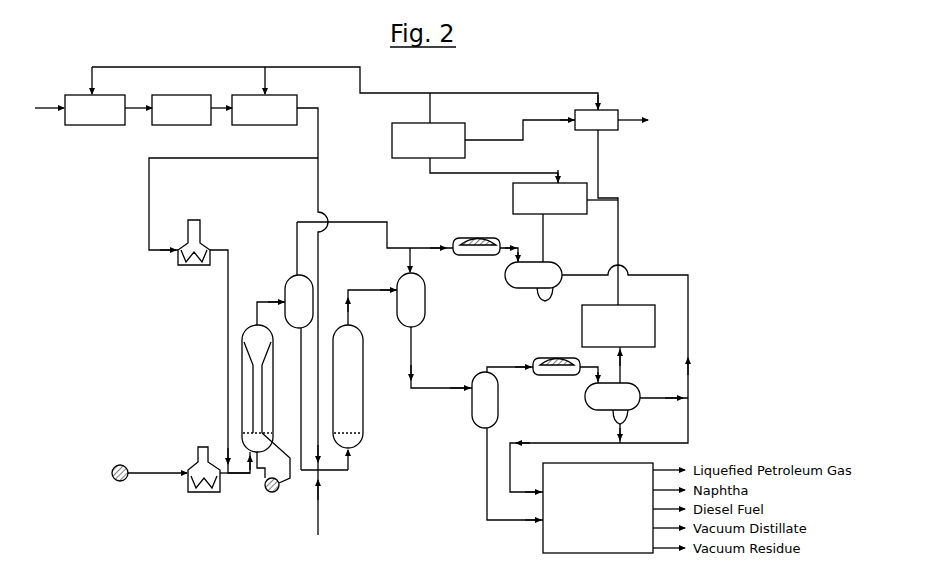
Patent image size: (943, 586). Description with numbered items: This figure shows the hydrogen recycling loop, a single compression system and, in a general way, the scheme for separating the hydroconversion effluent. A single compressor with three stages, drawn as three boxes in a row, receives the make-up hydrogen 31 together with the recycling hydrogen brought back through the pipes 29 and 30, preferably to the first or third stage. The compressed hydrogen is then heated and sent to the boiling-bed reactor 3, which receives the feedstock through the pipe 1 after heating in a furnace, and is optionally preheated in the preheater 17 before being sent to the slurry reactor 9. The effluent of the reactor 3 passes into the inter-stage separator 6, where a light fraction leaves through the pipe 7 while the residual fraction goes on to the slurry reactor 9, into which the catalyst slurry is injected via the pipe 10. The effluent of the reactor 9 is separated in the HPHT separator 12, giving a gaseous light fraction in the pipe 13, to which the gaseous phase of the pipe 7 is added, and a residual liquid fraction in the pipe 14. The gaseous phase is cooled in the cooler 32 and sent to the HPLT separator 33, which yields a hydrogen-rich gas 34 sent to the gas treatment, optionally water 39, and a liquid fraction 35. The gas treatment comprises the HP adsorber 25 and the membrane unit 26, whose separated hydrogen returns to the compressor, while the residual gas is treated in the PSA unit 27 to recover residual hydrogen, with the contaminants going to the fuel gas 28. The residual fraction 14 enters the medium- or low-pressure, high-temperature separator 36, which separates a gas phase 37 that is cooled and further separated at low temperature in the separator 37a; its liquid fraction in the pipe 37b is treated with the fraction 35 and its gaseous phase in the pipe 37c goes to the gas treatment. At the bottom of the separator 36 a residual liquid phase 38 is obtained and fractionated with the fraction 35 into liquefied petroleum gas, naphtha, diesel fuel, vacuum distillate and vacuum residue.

The pipe 1 is at (152, 478).
The reactor 3 is at (240, 365).
The inter-stage separator 6 is at (288, 277).
The pipe 7 is at (297, 232).
The reactor 9 is at (363, 382).
The pipe 10 is at (328, 507).
The HPHT separator 12 is at (427, 297).
The pipe 13 is at (414, 258).
The pipe 14 is at (413, 353).
The preheater 17 is at (199, 236).
The HP adsorber 25 is at (558, 183).
The membrane unit 26 is at (392, 147).
The PSA unit 27 is at (602, 108).
The fuel gas 28 is at (633, 126).
The pipe 29 is at (91, 75).
The pipe 30 is at (270, 77).
The make-up hydrogen 31 is at (48, 112).
The cooler 32 is at (472, 238).
The HPLT separator 33 is at (528, 290).
The hydrogen-rich gas 34 is at (547, 244).
The liquid fraction 35 is at (653, 272).
The separator 36 is at (500, 390).
The gas phase 37 is at (492, 367).
The low-temperature separator 37a is at (634, 405).
The pipe 37b is at (673, 392).
The pipe 37c is at (627, 372).
The residual liquid phase 38 is at (484, 450).
The water 39 is at (548, 303).